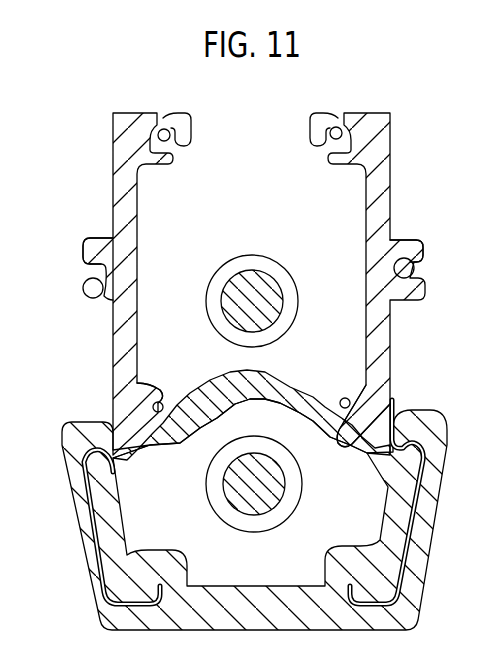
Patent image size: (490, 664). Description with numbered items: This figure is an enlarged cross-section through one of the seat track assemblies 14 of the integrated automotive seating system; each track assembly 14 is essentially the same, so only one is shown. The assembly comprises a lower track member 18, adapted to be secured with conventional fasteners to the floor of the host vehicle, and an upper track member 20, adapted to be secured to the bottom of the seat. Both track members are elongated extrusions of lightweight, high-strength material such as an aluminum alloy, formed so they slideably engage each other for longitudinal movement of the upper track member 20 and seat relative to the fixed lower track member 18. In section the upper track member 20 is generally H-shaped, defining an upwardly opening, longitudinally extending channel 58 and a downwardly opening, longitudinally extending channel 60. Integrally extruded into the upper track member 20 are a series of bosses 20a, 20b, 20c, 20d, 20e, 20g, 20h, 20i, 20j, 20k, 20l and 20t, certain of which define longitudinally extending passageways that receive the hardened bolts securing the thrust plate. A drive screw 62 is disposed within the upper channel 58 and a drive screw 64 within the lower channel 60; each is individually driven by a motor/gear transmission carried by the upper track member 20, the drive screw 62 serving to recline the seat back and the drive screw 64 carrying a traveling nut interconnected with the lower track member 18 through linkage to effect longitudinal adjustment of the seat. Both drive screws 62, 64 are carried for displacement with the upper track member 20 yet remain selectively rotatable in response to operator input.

The seat track assembly 14 is at (66, 326).
The lower track member 18 is at (88, 552).
The upper track member 20 is at (118, 173).
The boss 20a is at (152, 408).
The boss 20b is at (100, 300).
The boss 20c is at (160, 128).
The boss 20d is at (334, 128).
The boss 20e is at (420, 266).
The boss 20g is at (150, 381).
The boss 20h is at (84, 258).
The boss 20i is at (180, 118).
The boss 20j is at (322, 115).
The boss 20k is at (420, 238).
The boss 20l is at (359, 385).
The foot bead 20t is at (350, 402).
The upwardly opening channel 58 is at (345, 262).
The downwardly opening channel 60 is at (390, 418).
The drive screw 62 is at (248, 277).
The drive screw 64 is at (273, 487).